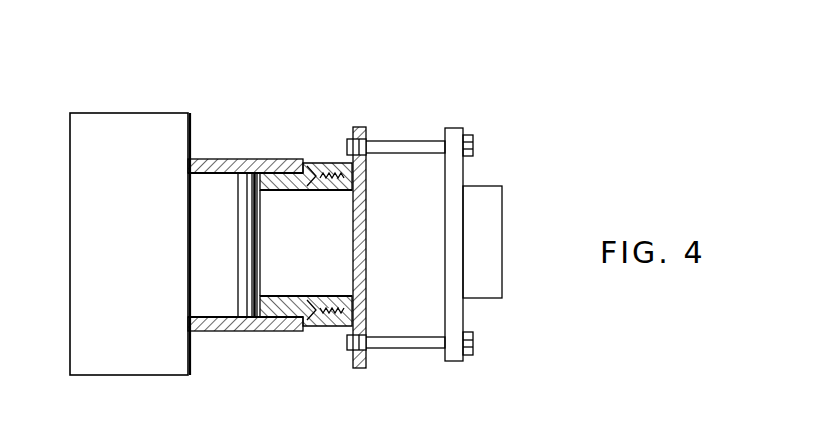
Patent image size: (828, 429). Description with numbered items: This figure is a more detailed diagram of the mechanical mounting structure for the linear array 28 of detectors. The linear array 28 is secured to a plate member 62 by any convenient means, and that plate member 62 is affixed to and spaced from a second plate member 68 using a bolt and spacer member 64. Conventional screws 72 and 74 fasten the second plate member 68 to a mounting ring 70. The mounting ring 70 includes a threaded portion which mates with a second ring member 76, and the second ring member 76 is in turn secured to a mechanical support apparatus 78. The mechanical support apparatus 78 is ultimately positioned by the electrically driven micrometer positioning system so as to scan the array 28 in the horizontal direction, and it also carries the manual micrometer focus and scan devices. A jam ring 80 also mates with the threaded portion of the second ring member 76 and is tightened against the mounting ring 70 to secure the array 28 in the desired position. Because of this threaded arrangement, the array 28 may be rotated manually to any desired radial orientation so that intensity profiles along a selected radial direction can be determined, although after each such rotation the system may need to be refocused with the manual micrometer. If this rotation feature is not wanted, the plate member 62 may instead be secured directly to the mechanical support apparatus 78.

The linear array 28 is at (488, 227).
The plate member 62 is at (460, 318).
The bolt and spacer member 64 is at (397, 147).
The second plate member 68 is at (359, 127).
The mounting ring 70 is at (300, 191).
The screw 72 is at (360, 177).
The screw 74 is at (362, 310).
The second ring member 76 is at (213, 160).
The mechanical support apparatus 78 is at (137, 122).
The jam ring 80 is at (248, 331).